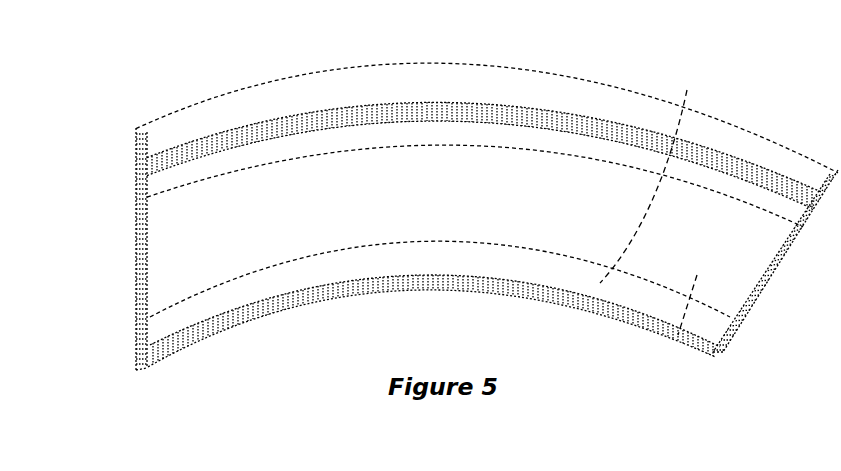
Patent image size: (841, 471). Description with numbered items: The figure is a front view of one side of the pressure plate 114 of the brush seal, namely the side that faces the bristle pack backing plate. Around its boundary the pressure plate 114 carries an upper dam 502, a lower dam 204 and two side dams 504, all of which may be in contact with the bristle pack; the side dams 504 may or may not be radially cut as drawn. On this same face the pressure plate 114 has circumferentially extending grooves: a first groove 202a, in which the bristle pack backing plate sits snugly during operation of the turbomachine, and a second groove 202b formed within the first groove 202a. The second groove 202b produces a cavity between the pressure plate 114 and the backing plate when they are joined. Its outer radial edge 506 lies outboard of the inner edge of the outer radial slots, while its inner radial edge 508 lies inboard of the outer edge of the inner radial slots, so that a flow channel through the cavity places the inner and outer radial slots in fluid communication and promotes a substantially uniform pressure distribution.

The pressure plate 114 is at (445, 203).
The first groove 202a is at (630, 157).
The second groove 202b is at (672, 343).
The lower dam 204 is at (182, 347).
The upper dam 502 is at (502, 100).
The side dams 504 is at (140, 260).
The outer radial edge 506 is at (398, 148).
The inner radial edge 508 is at (502, 240).